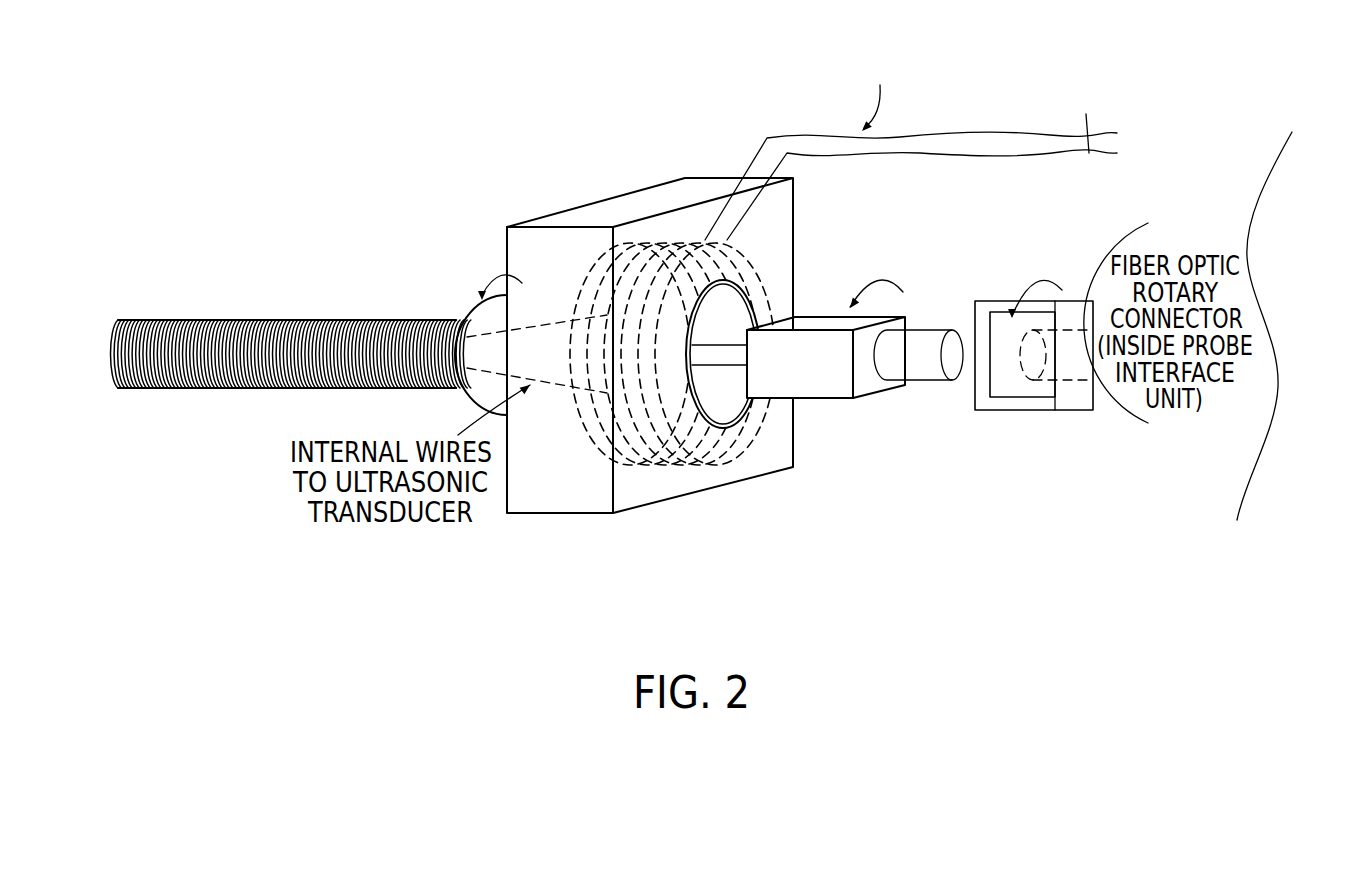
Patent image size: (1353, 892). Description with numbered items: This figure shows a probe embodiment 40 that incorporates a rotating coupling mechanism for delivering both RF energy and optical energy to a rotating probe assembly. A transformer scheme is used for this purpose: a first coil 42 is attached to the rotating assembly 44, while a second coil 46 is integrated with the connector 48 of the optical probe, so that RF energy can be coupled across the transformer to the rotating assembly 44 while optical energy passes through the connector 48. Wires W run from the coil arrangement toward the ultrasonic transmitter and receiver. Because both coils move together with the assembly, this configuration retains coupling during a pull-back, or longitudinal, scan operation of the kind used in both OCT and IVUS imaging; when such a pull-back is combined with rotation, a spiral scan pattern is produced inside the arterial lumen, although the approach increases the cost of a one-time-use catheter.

The probe embodiment 40 is at (216, 166).
The first coil 42 is at (553, 222).
The rotating assembly 44 is at (653, 188).
The second coil 46 is at (755, 408).
The connector 48 is at (878, 270).
The wires to ultrasonic transmitter/receiver W is at (1057, 131).